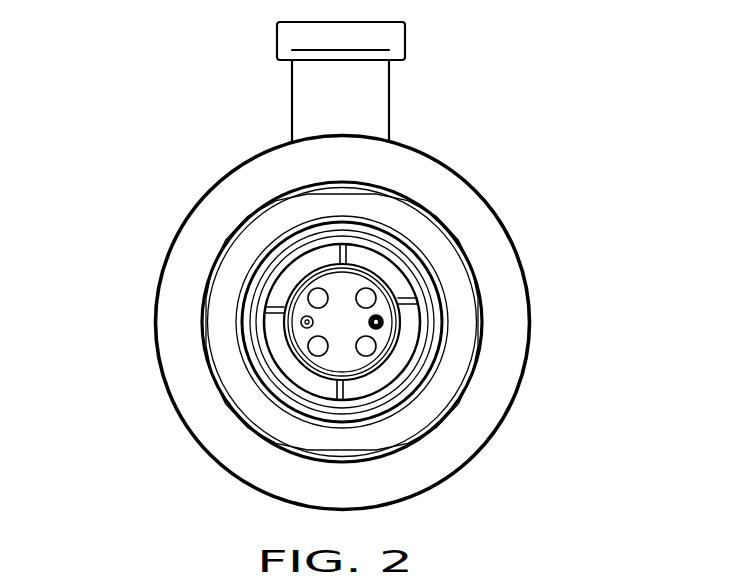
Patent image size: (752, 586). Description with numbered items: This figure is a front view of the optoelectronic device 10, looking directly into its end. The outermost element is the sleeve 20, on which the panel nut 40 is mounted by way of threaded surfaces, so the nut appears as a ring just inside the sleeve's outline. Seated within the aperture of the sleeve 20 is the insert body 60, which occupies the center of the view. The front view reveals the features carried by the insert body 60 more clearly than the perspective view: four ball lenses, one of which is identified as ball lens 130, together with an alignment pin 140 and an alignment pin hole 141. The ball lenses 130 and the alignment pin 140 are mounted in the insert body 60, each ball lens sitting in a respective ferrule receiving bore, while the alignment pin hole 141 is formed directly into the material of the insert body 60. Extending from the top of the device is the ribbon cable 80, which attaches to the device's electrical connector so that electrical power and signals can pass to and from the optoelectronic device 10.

The optoelectronic device 10 is at (560, 33).
The sleeve 20 is at (483, 192).
The panel nut 40 is at (483, 330).
The insert body 60 is at (400, 370).
The ribbon cable 80 is at (389, 97).
The ball lens 130 is at (335, 272).
The alignment pin 140 is at (312, 330).
The alignment pin hole 141 is at (388, 327).